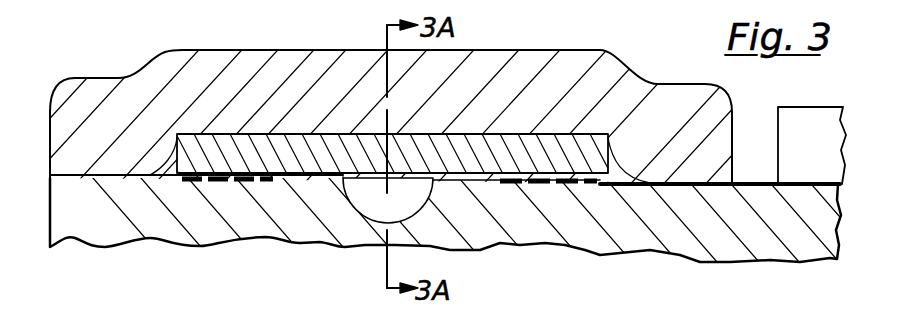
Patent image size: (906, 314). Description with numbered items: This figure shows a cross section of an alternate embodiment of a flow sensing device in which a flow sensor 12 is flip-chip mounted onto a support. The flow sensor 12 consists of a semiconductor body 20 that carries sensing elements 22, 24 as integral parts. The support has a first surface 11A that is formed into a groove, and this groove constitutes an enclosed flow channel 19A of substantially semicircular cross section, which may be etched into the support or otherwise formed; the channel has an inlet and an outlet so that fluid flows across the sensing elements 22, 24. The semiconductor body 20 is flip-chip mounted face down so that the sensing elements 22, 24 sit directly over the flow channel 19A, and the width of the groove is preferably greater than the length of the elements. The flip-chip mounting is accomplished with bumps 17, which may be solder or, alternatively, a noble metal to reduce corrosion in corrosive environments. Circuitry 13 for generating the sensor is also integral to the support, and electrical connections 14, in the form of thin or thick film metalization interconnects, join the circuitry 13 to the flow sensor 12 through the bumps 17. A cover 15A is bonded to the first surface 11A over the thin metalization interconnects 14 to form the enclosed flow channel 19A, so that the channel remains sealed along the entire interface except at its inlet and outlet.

The cover 15A is at (203, 50).
The first surface 11A is at (317, 175).
The flow sensor 12 is at (384, 89).
The semiconductor body 20 is at (456, 152).
The solder bumps 17 is at (587, 173).
The circuitry 13 is at (821, 155).
The electrical connections 14 is at (217, 177).
The sensing element 22 is at (328, 231).
The sensing element 24 is at (368, 190).
The flow channel 19A is at (403, 208).